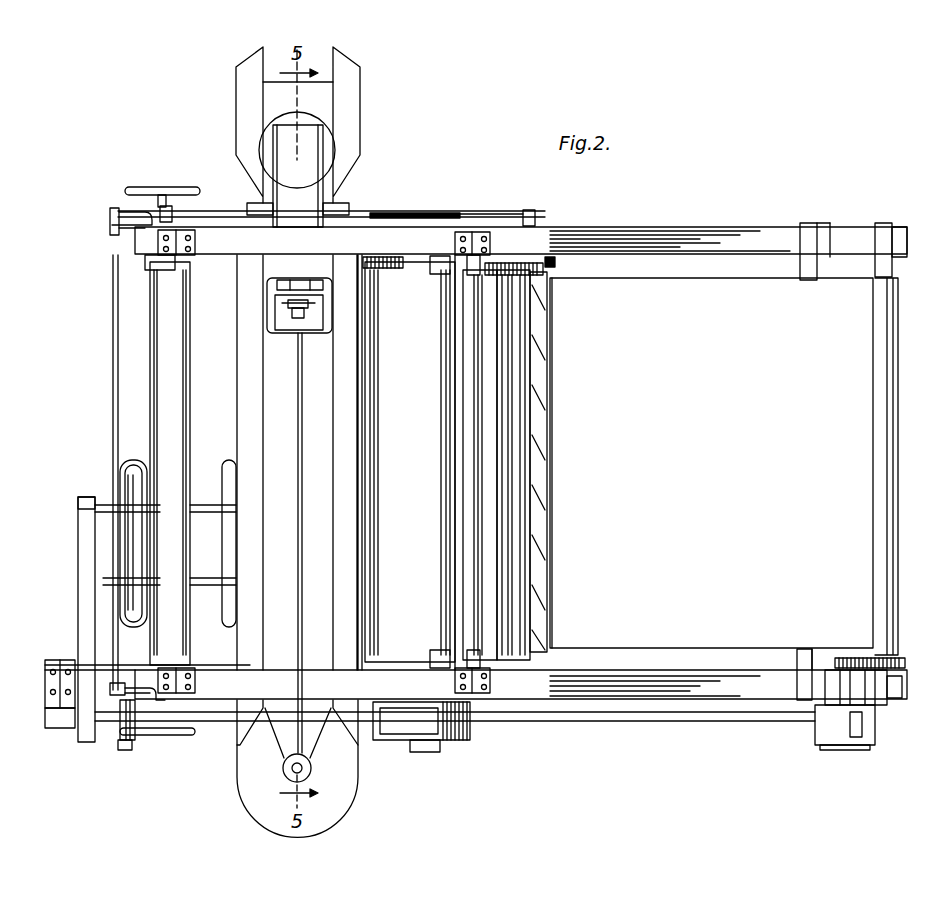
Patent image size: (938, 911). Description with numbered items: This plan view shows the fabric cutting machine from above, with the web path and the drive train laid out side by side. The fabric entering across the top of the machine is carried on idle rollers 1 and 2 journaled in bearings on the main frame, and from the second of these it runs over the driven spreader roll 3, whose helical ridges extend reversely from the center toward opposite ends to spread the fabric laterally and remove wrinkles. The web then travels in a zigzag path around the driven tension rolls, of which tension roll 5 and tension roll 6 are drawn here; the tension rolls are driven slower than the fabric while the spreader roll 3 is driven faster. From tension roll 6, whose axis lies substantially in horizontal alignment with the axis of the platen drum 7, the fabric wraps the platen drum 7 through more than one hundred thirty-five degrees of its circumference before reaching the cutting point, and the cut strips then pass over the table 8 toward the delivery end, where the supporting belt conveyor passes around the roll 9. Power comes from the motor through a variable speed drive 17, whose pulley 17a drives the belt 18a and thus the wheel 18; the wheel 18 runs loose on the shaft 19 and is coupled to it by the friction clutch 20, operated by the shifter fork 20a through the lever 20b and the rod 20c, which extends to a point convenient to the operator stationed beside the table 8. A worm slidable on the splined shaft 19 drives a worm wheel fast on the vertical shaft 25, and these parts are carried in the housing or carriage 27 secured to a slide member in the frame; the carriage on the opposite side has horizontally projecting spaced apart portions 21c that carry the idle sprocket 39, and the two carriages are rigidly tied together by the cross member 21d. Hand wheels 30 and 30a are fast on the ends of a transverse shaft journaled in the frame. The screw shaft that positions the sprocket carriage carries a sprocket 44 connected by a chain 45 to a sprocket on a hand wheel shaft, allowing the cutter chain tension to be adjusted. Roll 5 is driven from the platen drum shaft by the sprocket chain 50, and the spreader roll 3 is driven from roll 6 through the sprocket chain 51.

The idle roller 1 is at (170, 318).
The idle roller 2 is at (470, 328).
The spreader roll 3 is at (540, 345).
The tension roll 5 is at (500, 497).
The tension roll 6 is at (497, 528).
The platen drum 7 is at (410, 462).
The table 8 is at (711, 463).
The roll 9 is at (890, 470).
The variable speed drive 17 is at (140, 478).
The pulley 17a is at (78, 512).
The wheel 18 is at (78, 725).
The belt 18a is at (88, 590).
The shaft 19 is at (225, 718).
The clutch 20 is at (125, 733).
The shifter fork 20a is at (128, 748).
The lever 20b is at (112, 232).
The rod 20c is at (520, 214).
The spaced apart portions 21c is at (298, 176).
The cross member 21d is at (298, 430).
The vertical shaft 25 is at (285, 772).
The housing 27 is at (345, 785).
The hand wheel 30 is at (160, 735).
The hand wheel 30a is at (197, 185).
The idle sprocket 39 is at (340, 150).
The sprocket 44 is at (290, 318).
The chain 45 is at (312, 318).
The sprocket chain 50 is at (470, 218).
The sprocket chain 51 is at (555, 262).